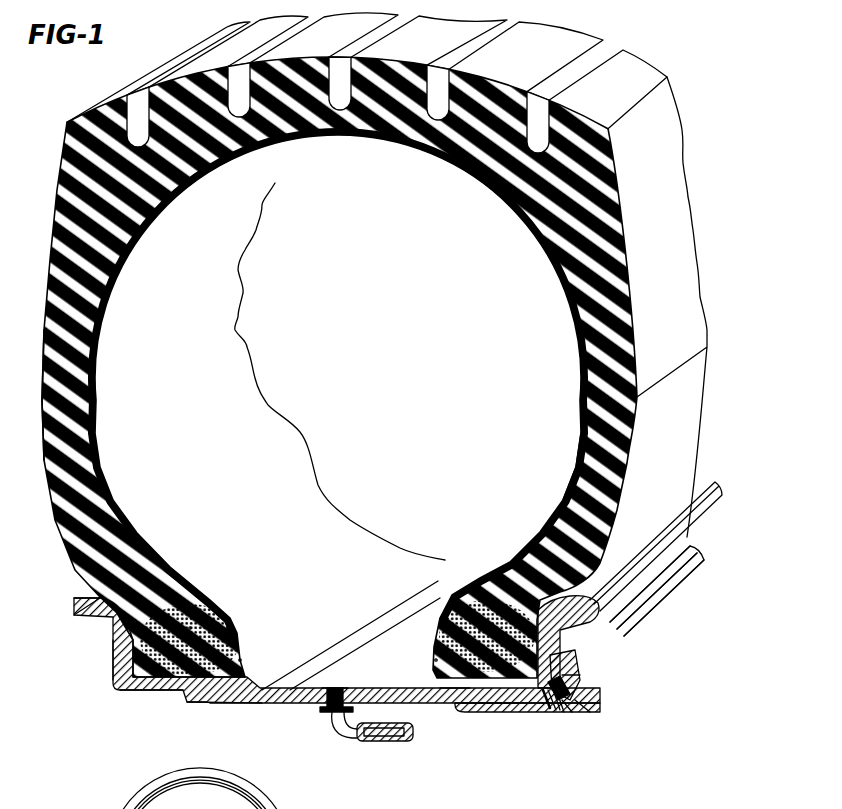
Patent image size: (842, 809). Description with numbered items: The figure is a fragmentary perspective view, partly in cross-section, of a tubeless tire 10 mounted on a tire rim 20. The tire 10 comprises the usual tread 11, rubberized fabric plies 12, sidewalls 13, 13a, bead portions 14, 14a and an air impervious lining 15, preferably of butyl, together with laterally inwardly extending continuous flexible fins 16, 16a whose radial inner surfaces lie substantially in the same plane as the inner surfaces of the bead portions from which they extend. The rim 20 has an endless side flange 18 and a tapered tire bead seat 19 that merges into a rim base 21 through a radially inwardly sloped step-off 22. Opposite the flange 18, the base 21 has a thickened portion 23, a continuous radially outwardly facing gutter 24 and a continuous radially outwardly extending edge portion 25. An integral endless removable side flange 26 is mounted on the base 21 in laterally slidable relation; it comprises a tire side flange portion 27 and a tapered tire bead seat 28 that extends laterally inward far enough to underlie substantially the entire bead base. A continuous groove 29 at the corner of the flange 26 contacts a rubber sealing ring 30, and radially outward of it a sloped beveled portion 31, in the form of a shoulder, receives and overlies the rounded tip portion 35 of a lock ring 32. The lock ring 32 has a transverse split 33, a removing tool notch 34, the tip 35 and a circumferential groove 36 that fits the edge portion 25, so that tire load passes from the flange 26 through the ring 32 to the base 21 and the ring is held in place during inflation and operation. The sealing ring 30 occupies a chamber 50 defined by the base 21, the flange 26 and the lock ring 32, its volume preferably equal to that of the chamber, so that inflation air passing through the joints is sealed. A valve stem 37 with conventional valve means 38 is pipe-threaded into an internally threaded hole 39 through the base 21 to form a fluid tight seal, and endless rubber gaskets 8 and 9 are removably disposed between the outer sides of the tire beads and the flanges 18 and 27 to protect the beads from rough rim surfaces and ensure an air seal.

The rubber gasket 8 is at (110, 657).
The rubber gasket 9 is at (535, 696).
The tubeless tire 10 is at (700, 167).
The tread 11 is at (638, 78).
The rubberized fabric plies 12 is at (490, 233).
The sidewall 13 is at (47, 462).
The sidewall 13a is at (685, 428).
The bead portion 14 is at (227, 615).
The bead portion 14a is at (460, 620).
The air impervious lining 15 is at (583, 437).
The flexible fin 16 is at (270, 684).
The flexible fin 16a is at (435, 666).
The side flange 18 is at (100, 615).
The tapered tire bead seat 19 is at (157, 688).
The tire rim 20 is at (107, 683).
The rim base 21 is at (288, 706).
The step-off 22 is at (280, 686).
The thickened portion 23 is at (490, 712).
The gutter 24 is at (565, 716).
The edge portion 25 is at (600, 698).
The removable side flange 26 is at (700, 515).
The tire side flange portion 27 is at (562, 628).
The tapered tire bead seat 28 is at (450, 702).
The groove 29 is at (552, 712).
The sealing ring 30 is at (557, 708).
The beveled portion 31 is at (565, 672).
The lock ring 32 is at (655, 613).
The transverse split 33 is at (672, 593).
The lock ring removing tool notch 34 is at (690, 593).
The tip portion 35 is at (582, 678).
The groove 36 is at (582, 706).
The valve stem 37 is at (350, 740).
The valve means 38 is at (398, 740).
The threaded hole 39 is at (322, 690).
The chamber 50 is at (560, 720).